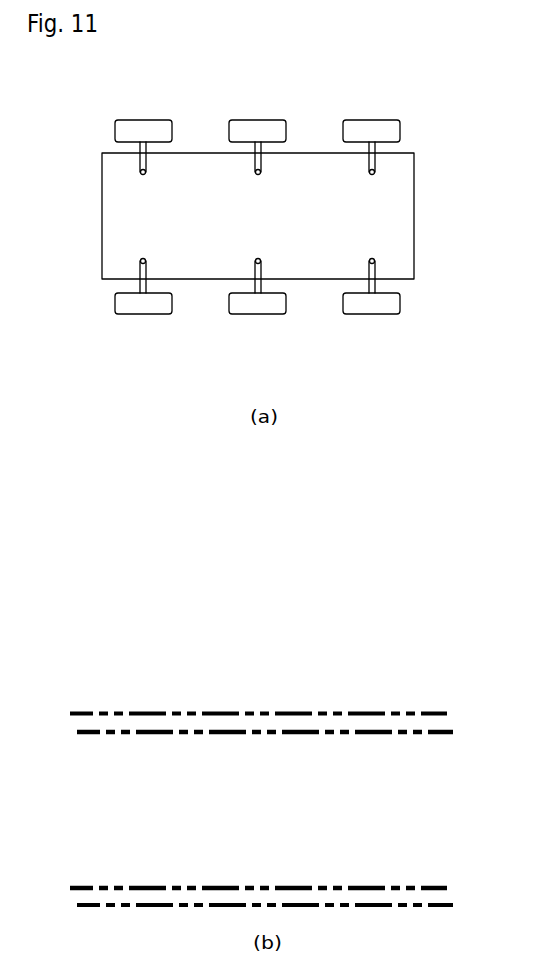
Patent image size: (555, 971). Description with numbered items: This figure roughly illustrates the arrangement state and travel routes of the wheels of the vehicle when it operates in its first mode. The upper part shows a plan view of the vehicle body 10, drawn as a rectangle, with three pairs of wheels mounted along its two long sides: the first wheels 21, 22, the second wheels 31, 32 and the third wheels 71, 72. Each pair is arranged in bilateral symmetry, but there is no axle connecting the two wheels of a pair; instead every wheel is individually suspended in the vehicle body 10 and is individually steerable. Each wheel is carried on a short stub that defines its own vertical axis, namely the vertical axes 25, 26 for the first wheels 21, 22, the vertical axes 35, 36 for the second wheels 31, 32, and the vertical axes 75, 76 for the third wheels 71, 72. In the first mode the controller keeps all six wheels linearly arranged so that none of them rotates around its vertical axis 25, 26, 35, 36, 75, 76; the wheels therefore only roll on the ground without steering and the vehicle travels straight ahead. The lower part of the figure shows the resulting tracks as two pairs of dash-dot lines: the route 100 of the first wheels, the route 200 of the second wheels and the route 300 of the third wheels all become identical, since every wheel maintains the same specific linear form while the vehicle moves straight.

The vehicle body 10 is at (115, 213).
The first wheel 21 is at (382, 125).
The first wheel 22 is at (383, 309).
The vertical axis 25 is at (372, 172).
The vertical axis 26 is at (375, 261).
The second wheel 31 is at (255, 127).
The second wheel 32 is at (260, 307).
The vertical axis 35 is at (257, 172).
The vertical axis 36 is at (257, 261).
The third wheel 71 is at (127, 127).
The third wheel 72 is at (127, 310).
The vertical axis 75 is at (142, 172).
The vertical axis 76 is at (142, 261).
The route of the first wheels 100 is at (308, 733).
The route of the second wheels 200 is at (255, 713).
The route of the third wheels 300 is at (157, 714).